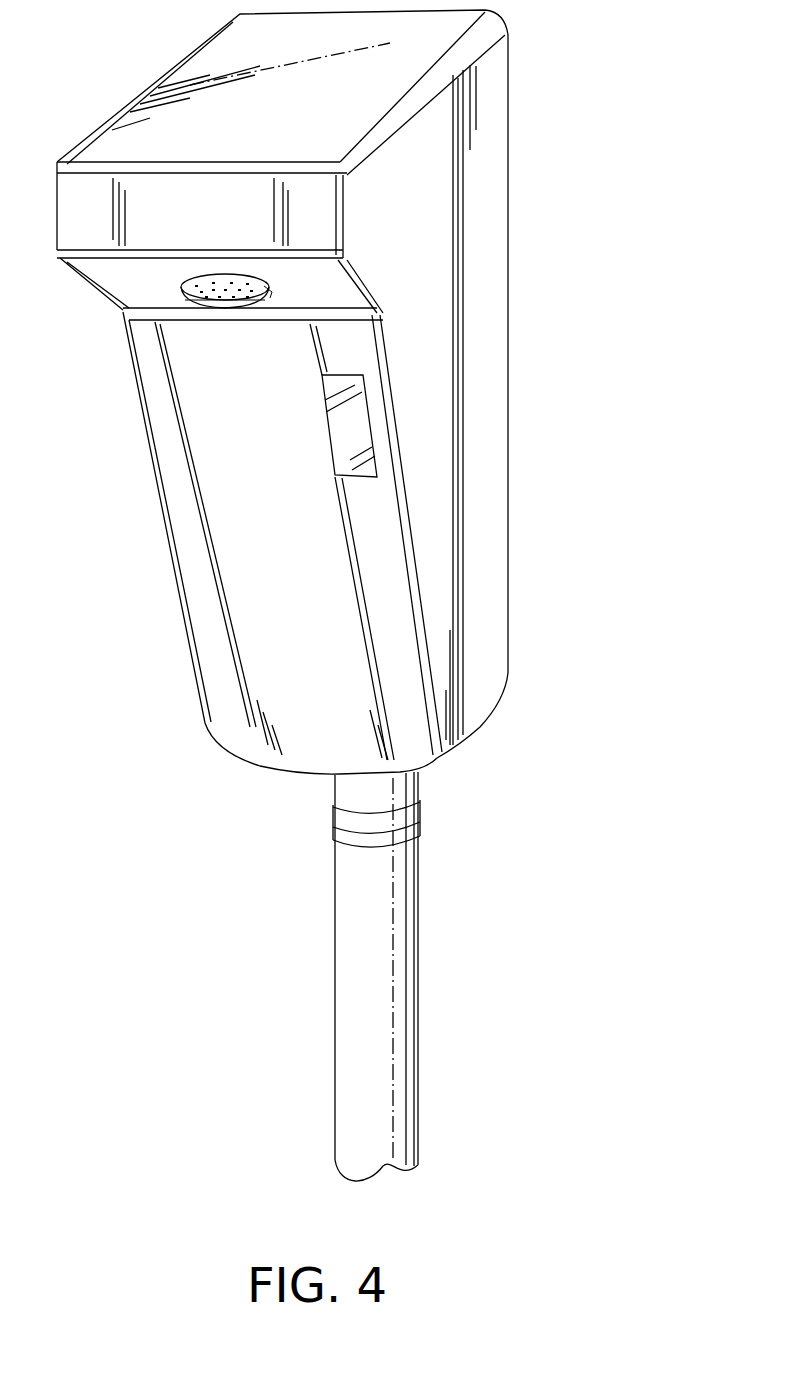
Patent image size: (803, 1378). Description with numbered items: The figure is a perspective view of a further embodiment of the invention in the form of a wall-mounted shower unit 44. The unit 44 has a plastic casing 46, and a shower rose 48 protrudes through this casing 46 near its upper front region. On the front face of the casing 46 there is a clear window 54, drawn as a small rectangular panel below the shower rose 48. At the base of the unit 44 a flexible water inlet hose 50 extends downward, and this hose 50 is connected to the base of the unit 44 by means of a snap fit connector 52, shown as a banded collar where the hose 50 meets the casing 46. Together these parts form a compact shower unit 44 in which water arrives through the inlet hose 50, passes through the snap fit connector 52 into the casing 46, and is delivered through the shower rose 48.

The wall-mounted shower unit 44 is at (533, 267).
The plastic casing 46 is at (492, 588).
The shower rose 48 is at (236, 301).
The flexible water inlet hose 50 is at (398, 1033).
The snap fit connector 52 is at (333, 808).
The clear window 54 is at (340, 440).